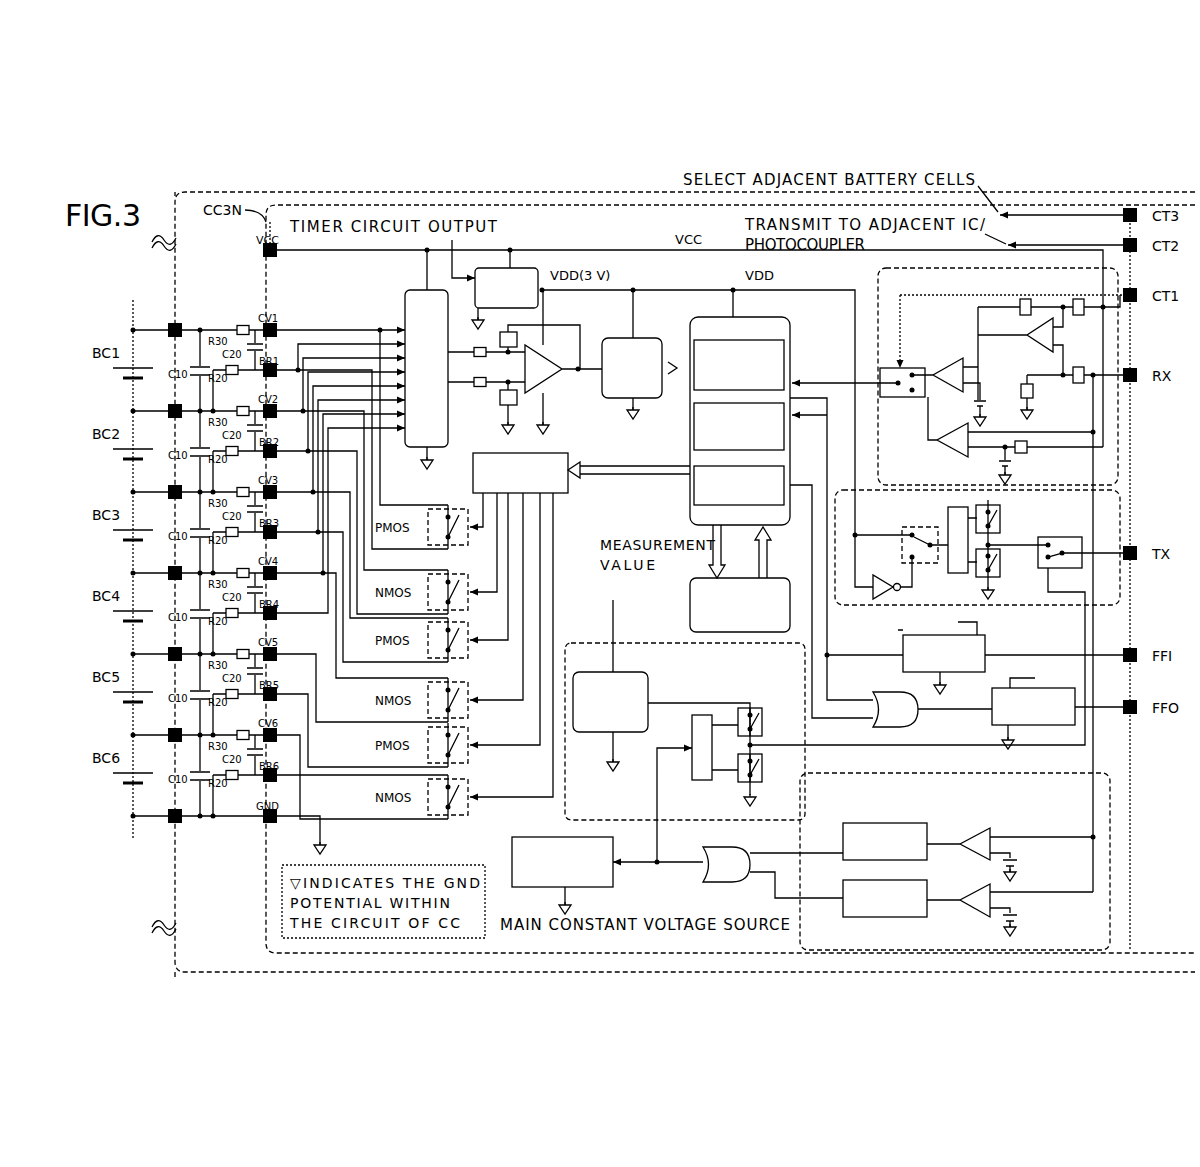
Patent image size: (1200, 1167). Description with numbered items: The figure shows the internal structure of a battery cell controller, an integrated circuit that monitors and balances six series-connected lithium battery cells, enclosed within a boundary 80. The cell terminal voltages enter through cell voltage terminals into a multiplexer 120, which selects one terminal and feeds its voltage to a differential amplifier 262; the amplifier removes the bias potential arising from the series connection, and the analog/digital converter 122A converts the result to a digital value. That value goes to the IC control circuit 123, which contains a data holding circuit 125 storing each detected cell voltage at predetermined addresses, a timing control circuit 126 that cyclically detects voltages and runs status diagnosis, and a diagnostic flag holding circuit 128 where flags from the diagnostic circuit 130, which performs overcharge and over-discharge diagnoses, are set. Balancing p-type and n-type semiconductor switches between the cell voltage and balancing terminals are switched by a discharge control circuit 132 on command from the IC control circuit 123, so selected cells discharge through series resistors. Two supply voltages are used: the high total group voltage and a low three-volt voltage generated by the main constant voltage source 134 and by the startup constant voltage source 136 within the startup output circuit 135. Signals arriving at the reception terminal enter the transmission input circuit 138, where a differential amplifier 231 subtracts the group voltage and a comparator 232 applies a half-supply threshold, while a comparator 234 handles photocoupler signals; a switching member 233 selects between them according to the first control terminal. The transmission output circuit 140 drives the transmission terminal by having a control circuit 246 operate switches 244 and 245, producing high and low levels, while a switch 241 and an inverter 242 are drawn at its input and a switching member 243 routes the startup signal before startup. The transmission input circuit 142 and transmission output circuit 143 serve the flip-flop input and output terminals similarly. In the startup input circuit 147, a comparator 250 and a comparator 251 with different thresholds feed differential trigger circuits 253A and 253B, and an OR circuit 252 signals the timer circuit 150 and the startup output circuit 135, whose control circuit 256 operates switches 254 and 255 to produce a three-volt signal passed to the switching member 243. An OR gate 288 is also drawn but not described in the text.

The battery module 80 is at (177, 208).
The multiplexer 120 is at (415, 359).
The analog/digital converter 122A is at (639, 354).
The IC control circuit 123 is at (728, 407).
The data holding circuit 125 is at (786, 358).
The timing control circuit 126 is at (693, 415).
The diagnostic flag holding circuit 128 is at (692, 494).
The diagnostic circuit 130 is at (688, 600).
The discharge control circuit 132 is at (564, 625).
The main constant voltage source 134 is at (520, 268).
The startup output circuit 135 is at (825, 715).
The startup constant voltage source 136 is at (598, 734).
The transmission input circuit 138 is at (1027, 373).
The transmission output circuit 140 is at (1000, 547).
The transmission input circuit 142 is at (986, 648).
The transmission output circuit 143 is at (992, 725).
The startup input circuit 147 is at (994, 861).
The timer circuit 150 is at (614, 876).
The differential amplifier 231 is at (1049, 357).
The comparator 232 is at (962, 366).
The switching member 233 is at (902, 396).
The comparator 234 is at (1000, 440).
The switch 241 is at (925, 534).
The inverter 242 is at (883, 567).
The switching member 243 is at (1135, 500).
The switch 244 is at (1006, 516).
The switch 245 is at (1004, 566).
The control circuit 246 is at (960, 552).
The comparator 250 is at (1011, 842).
The comparator 251 is at (1010, 911).
The OR circuit 252 is at (773, 875).
The differential trigger circuit 253A is at (843, 823).
The differential trigger circuit 253B is at (843, 917).
The switch 254 is at (766, 722).
The switch 255 is at (766, 780).
The control circuit 256 is at (692, 780).
The differential amplifier 262 is at (567, 382).
The OR circuit 288 is at (922, 722).